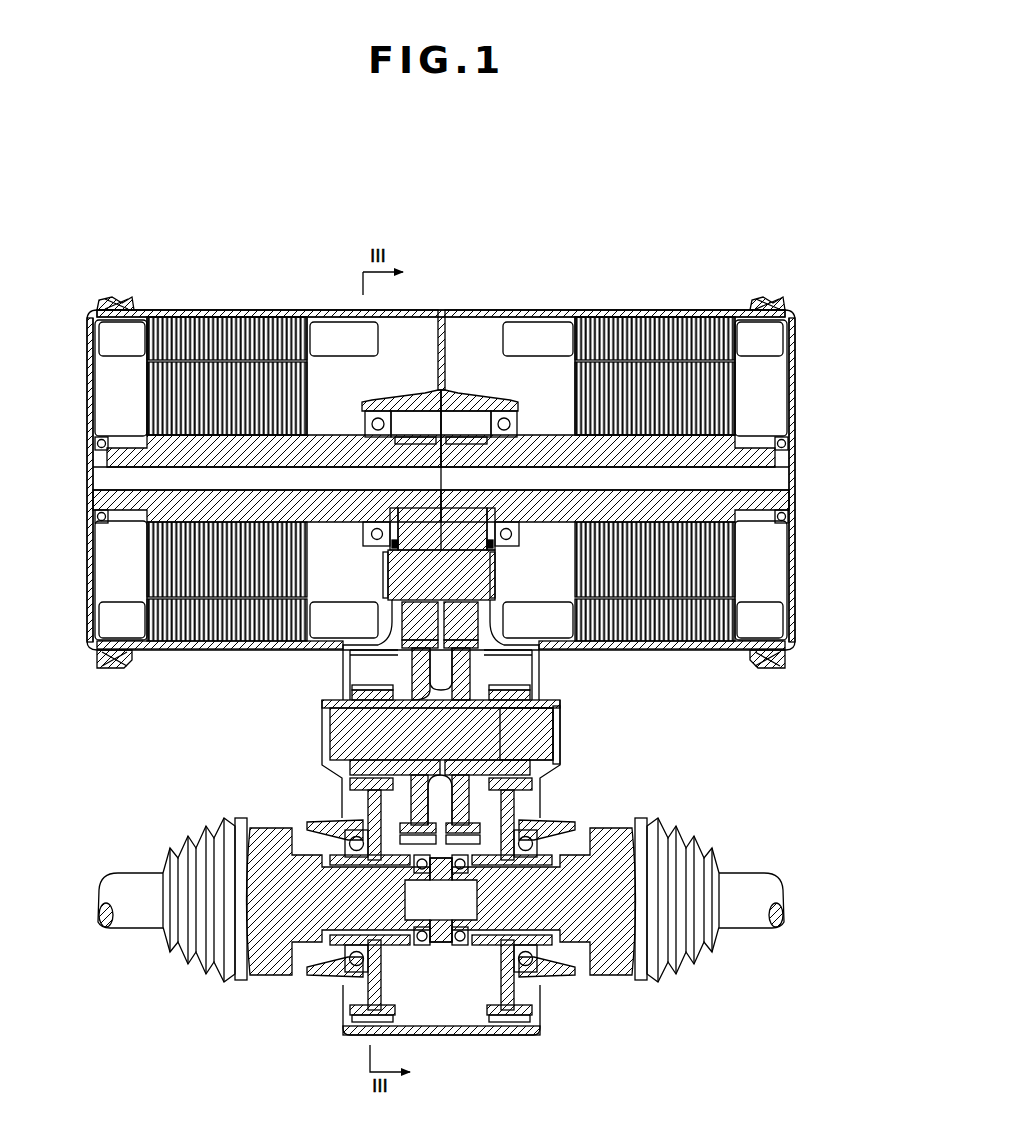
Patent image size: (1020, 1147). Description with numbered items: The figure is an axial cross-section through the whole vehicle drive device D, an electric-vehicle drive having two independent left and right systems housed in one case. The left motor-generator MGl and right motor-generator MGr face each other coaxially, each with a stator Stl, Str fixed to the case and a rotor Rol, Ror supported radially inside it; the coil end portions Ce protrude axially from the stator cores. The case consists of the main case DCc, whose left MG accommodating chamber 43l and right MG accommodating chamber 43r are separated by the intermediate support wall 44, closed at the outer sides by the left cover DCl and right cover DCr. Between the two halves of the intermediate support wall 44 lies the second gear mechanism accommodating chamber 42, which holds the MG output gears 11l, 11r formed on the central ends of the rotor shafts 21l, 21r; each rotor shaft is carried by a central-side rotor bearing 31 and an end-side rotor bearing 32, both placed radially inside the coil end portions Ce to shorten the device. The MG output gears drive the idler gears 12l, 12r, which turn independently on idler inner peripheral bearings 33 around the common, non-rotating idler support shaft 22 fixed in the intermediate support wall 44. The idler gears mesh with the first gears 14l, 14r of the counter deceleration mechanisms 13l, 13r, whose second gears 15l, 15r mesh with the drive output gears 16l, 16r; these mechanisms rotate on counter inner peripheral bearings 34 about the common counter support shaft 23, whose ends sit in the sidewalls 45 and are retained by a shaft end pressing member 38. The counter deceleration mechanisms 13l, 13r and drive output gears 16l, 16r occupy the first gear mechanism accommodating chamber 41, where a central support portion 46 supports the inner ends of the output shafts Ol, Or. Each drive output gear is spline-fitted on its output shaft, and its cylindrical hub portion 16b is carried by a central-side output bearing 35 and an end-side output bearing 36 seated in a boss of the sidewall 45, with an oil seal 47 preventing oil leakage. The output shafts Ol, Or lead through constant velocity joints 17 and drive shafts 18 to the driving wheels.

The vehicle drive device D is at (150, 215).
The left motor-generator MGl is at (253, 308).
The right motor-generator MGr is at (625, 308).
The left stator Stl is at (205, 308).
The right stator Str is at (672, 308).
The left rotor Rol is at (146, 405).
The right rotor Ror is at (738, 405).
The coil end portion Ce is at (105, 335).
The main case DCc is at (495, 310).
The left cover DCl is at (100, 668).
The right cover DCr is at (775, 668).
The left MG accommodating chamber 43l is at (392, 338).
The right MG accommodating chamber 43r is at (480, 338).
The intermediate support wall 44 is at (444, 392).
The second gear mechanism accommodating chamber 42 is at (432, 430).
The left MG output gear 11l is at (392, 416).
The right MG output gear 11r is at (470, 428).
The central-side rotor bearing 31 is at (368, 420).
The end-side rotor bearing 32 is at (103, 440).
The idler inner peripheral bearing 33 is at (442, 505).
The left rotor shaft 21l is at (140, 525).
The right rotor shaft 21r is at (755, 525).
The idler support shaft 22 is at (388, 565).
The left idler gear 12l is at (398, 618).
The right idler gear 12r is at (480, 618).
The left counter deceleration mechanism 13l is at (372, 678).
The right counter deceleration mechanism 13r is at (502, 678).
The left first gear 14l is at (413, 671).
The right first gear 14r is at (468, 671).
The left second gear 15l is at (348, 698).
The right second gear 15r is at (532, 698).
The counter inner peripheral bearing 34 is at (350, 714).
The sidewall 45 is at (330, 742).
The shaft end pressing member 38 is at (562, 738).
The counter support shaft 23 is at (550, 750).
The left drive output gear 16l is at (368, 808).
The right drive output gear 16r is at (512, 808).
The hub portion 16b is at (320, 985).
The left output shaft Ol is at (262, 830).
The right output shaft Or is at (622, 830).
The constant velocity joint 17 is at (188, 855).
The drive shaft 18 is at (130, 875).
The oil seal 47 is at (248, 978).
The central-side output bearing 35 is at (432, 945).
The end-side output bearing 36 is at (350, 972).
The central support portion 46 is at (443, 960).
The first gear mechanism accommodating chamber 41 is at (465, 1040).